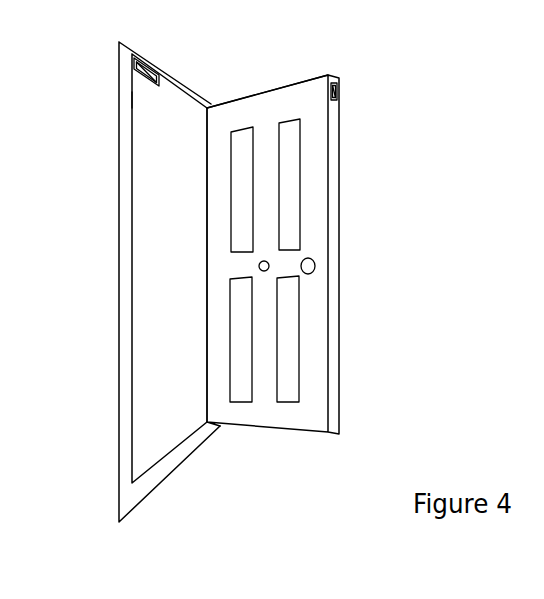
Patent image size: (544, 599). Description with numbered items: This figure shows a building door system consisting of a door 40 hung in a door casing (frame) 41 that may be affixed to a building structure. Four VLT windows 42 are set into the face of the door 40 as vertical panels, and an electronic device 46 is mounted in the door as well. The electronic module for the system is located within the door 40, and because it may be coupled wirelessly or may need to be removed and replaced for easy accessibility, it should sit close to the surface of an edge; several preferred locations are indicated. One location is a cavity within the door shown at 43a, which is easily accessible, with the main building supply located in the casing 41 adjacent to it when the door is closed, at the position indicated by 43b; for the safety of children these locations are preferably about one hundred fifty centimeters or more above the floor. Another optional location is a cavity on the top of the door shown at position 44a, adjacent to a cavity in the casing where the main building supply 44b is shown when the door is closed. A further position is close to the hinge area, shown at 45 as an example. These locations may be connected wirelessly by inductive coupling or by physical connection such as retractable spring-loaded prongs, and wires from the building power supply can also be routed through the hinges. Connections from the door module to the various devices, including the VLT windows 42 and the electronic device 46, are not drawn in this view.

The door 40 is at (385, 352).
The door casing (frame) 41 is at (123, 457).
The VLT windows 42 is at (242, 328).
The electronic module location in door cavity 43a is at (342, 92).
The main building supply position in casing 43b is at (133, 100).
The electronic module position on top of door 44a is at (310, 80).
The main building supply in casing 44b is at (134, 68).
The hinge area position 45 is at (205, 120).
The electronic device 46 is at (259, 267).